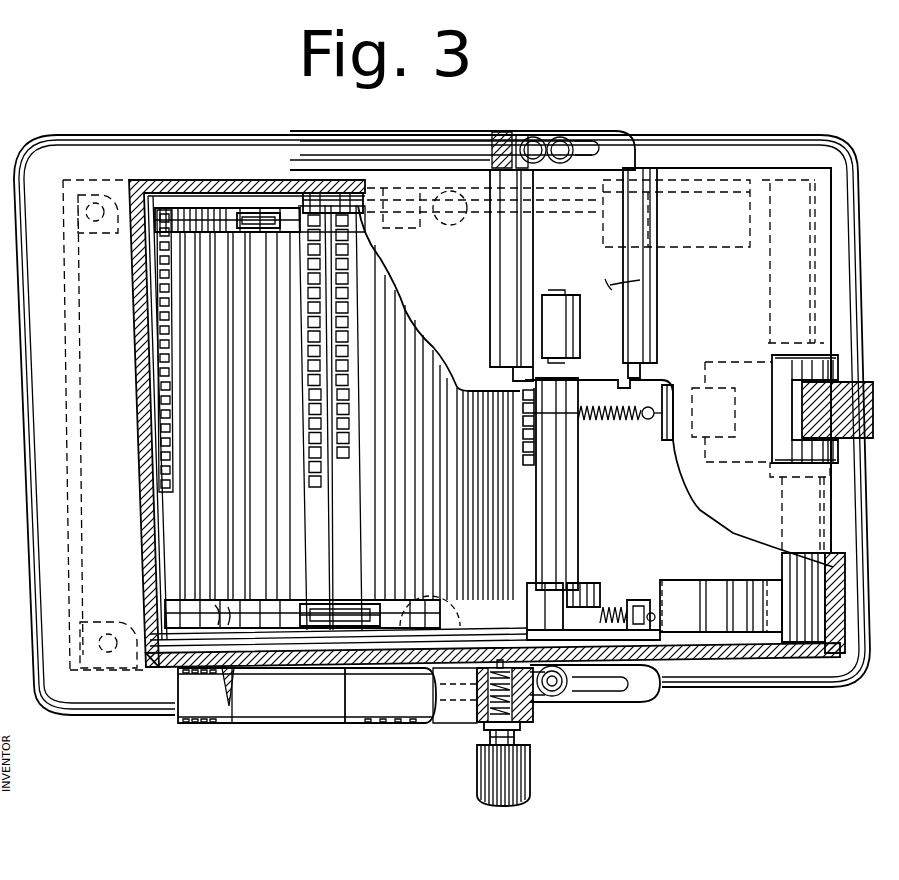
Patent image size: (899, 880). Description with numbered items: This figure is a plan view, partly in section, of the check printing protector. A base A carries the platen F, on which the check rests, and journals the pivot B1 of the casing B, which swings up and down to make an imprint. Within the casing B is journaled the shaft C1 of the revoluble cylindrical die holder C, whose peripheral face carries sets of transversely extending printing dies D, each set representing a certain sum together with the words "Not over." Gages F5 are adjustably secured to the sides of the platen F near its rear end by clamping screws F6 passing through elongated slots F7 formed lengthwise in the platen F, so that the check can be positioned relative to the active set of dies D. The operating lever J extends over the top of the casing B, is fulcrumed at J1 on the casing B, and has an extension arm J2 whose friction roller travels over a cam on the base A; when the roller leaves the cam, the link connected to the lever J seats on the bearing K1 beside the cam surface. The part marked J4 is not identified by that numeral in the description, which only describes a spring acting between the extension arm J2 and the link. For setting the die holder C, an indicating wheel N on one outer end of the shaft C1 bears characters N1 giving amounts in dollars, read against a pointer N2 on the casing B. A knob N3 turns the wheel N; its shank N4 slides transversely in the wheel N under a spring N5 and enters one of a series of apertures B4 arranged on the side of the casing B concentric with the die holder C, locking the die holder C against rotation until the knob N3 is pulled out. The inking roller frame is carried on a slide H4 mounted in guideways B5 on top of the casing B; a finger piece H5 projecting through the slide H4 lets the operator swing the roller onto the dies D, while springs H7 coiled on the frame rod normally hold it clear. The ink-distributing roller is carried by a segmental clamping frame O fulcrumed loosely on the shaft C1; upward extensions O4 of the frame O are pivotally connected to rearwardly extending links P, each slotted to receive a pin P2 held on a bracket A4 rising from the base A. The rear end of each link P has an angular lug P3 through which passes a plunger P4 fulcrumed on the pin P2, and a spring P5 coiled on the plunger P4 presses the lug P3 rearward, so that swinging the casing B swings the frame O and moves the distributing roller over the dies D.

The base A is at (798, 145).
The casing B is at (137, 377).
The pivot B1 is at (570, 512).
The apertures B4 is at (575, 616).
The guideways B5 is at (512, 328).
The die holder C is at (262, 516).
The shaft C1 is at (362, 725).
The printing dies D is at (150, 320).
The platen F is at (30, 432).
The gages F5 is at (500, 135).
The clamping screws F6 is at (525, 140).
The elongated slots F7 is at (596, 150).
The slide H4 is at (640, 280).
The finger piece H5 is at (563, 332).
The springs H7 is at (558, 138).
The operating lever J is at (864, 406).
The fulcrum J1 is at (778, 298).
The extension arm J2 is at (668, 436).
The spring J4 is at (620, 424).
The bearing K1 is at (830, 338).
The indicating wheel N is at (321, 716).
The characters N1 is at (375, 716).
The pointer N2 is at (232, 722).
The knob N3 is at (527, 765).
The shank N4 is at (518, 730).
The spring N5 is at (477, 706).
The clamping frame O is at (206, 232).
The upward extensions O4 is at (283, 214).
The links P is at (366, 216).
The pin P2 is at (545, 606).
The angular lug P3 is at (640, 600).
The plunger P4 is at (655, 617).
The spring P5 is at (610, 612).
The bracket A4 is at (600, 584).